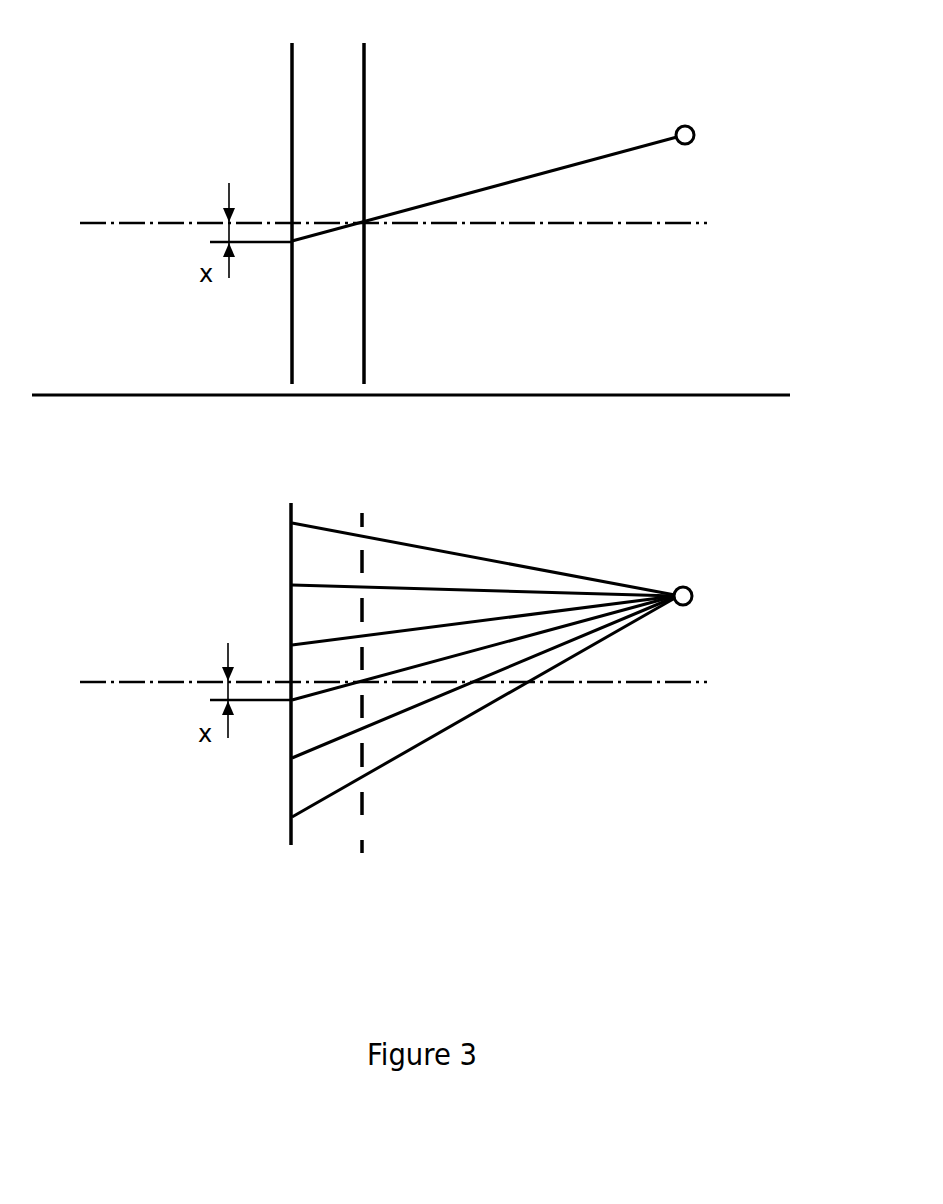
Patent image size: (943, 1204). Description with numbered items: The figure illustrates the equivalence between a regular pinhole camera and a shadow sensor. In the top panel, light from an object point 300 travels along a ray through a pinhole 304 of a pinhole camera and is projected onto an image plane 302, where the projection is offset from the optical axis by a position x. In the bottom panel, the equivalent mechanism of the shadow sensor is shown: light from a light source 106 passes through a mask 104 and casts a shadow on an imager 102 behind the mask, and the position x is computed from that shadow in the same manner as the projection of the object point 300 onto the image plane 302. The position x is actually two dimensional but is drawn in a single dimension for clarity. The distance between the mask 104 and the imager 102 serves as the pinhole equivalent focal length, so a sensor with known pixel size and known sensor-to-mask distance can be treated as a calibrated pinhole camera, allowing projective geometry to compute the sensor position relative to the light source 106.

The image plane 302 is at (273, 158).
The pinhole 304 is at (373, 212).
The object point 300 is at (710, 122).
The imager 102 is at (287, 853).
The mask 104 is at (372, 860).
The light source 106 is at (708, 582).